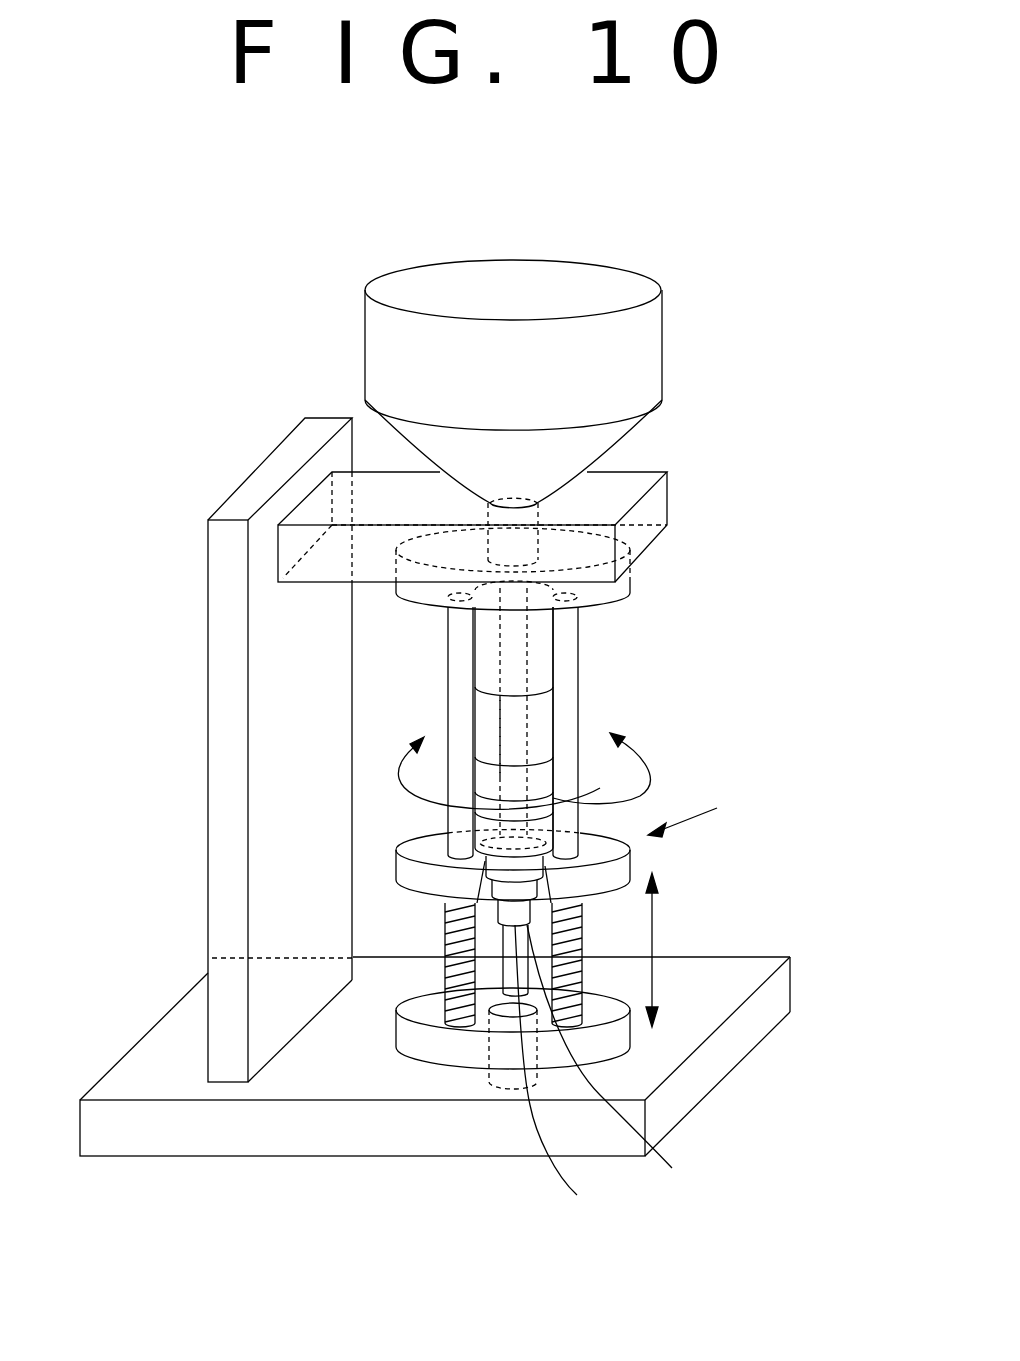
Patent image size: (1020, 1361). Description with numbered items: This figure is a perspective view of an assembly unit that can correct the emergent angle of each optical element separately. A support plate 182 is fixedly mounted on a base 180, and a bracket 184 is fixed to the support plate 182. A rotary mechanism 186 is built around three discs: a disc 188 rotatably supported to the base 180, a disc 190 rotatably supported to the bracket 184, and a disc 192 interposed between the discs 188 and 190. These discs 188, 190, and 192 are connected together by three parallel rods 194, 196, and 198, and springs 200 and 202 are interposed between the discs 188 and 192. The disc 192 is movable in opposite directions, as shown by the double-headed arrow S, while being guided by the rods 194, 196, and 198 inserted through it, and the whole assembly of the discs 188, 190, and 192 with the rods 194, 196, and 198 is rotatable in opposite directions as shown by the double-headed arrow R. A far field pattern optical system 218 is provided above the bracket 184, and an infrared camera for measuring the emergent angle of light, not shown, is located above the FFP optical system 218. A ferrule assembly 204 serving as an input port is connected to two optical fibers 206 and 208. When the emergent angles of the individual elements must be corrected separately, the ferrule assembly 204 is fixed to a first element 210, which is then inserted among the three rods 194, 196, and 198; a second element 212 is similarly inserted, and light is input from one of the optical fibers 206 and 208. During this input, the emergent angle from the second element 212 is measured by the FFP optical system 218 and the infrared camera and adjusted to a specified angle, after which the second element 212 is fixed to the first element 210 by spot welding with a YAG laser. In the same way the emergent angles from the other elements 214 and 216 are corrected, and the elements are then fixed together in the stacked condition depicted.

The base 180 is at (290, 1138).
The support plate 182 is at (215, 740).
The bracket 184 is at (634, 474).
The rotary mechanism 186 is at (724, 816).
The disc 188 is at (410, 1046).
The disc 190 is at (630, 578).
The disc 192 is at (632, 862).
The rod 194 is at (454, 634).
The rod 196 is at (573, 627).
The rod 198 is at (508, 950).
The spring 200 is at (446, 932).
The spring 202 is at (583, 968).
The ferrule assembly 204 is at (485, 860).
The optical fiber 206 is at (653, 1165).
The optical fiber 208 is at (552, 1172).
The first element 210 is at (630, 768).
The second element 212 is at (486, 767).
The element 214 is at (538, 700).
The element 216 is at (537, 643).
The far field pattern (FFP) optical system 218 is at (514, 282).
The double-headed arrow R is at (390, 774).
The double-headed arrow S is at (652, 937).